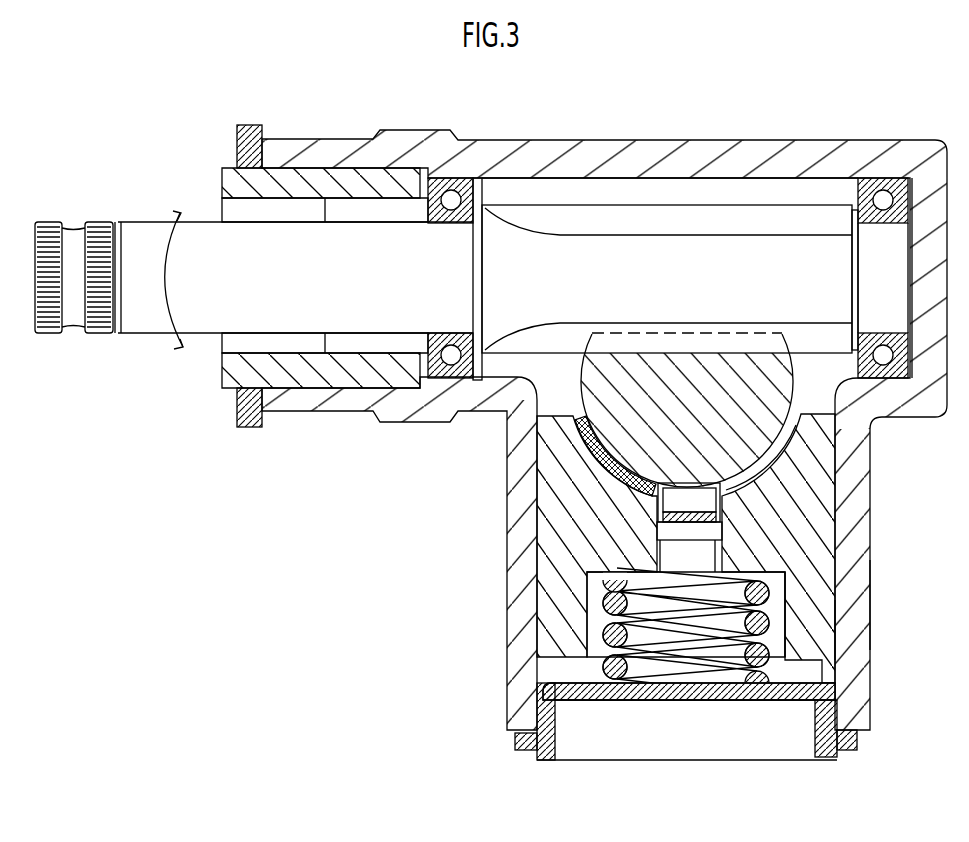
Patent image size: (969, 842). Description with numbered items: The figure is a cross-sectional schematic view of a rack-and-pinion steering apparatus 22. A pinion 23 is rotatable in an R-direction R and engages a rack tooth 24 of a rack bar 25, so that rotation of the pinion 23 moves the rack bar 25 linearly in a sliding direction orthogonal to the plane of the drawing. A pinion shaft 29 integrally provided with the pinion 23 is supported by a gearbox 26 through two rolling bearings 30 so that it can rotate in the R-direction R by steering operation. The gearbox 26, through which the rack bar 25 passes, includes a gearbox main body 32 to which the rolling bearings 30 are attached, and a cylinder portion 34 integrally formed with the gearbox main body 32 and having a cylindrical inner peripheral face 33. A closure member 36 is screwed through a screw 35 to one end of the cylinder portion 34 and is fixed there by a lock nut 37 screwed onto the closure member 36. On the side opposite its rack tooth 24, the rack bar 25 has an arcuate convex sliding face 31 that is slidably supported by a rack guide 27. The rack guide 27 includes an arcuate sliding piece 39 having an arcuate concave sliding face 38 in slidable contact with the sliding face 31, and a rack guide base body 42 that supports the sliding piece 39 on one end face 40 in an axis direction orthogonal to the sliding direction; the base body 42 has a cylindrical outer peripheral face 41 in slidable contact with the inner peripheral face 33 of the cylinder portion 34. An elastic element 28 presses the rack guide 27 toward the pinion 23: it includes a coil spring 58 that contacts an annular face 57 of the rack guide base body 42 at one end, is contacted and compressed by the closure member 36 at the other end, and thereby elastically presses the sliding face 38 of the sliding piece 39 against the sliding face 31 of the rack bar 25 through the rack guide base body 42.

The rack-and-pinion steering apparatus 22 is at (262, 122).
The pinion 23 is at (688, 250).
The rack tooth 24 is at (703, 343).
The rack bar 25 is at (630, 440).
The gearbox 26 is at (740, 152).
The rack guide 27 is at (555, 538).
The elastic element 28 is at (610, 650).
The pinion shaft 29 is at (147, 250).
The rolling bearing 30 is at (451, 180).
The sliding face 31 is at (762, 455).
The gearbox main body 32 is at (585, 150).
The inner peripheral face 33 is at (838, 606).
The cylinder portion 34 is at (525, 585).
The screw 35 is at (813, 730).
The closure member 36 is at (694, 700).
The lock nut 37 is at (848, 752).
The sliding face 38 is at (610, 440).
The sliding piece 39 is at (722, 500).
The end face 40 is at (560, 410).
The outer peripheral face 41 is at (837, 635).
The rack guide base body 42 is at (818, 576).
The annular face 57 is at (612, 592).
The coil spring 58 is at (660, 650).
The R-direction R is at (165, 308).